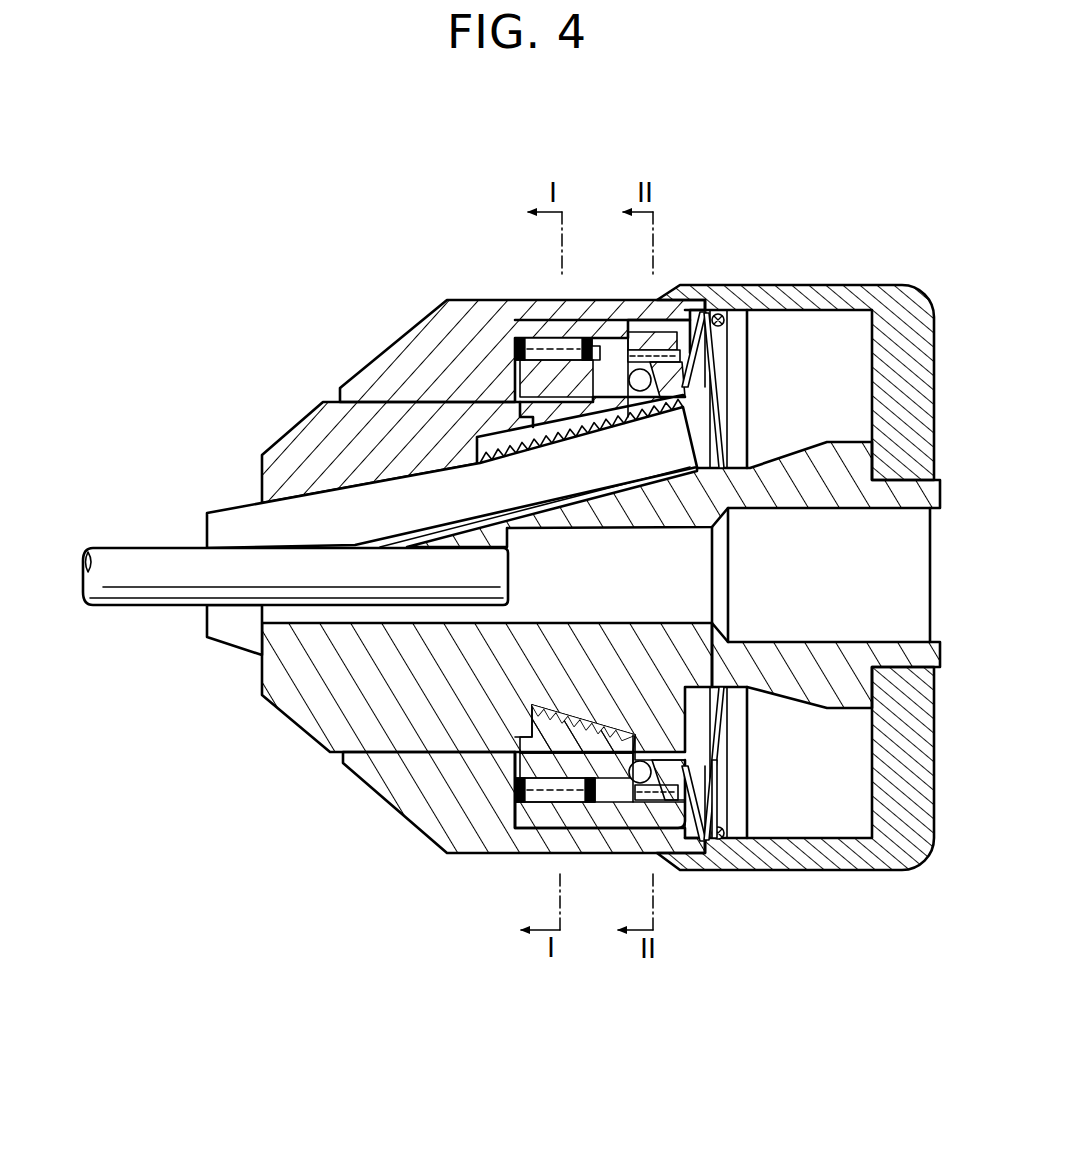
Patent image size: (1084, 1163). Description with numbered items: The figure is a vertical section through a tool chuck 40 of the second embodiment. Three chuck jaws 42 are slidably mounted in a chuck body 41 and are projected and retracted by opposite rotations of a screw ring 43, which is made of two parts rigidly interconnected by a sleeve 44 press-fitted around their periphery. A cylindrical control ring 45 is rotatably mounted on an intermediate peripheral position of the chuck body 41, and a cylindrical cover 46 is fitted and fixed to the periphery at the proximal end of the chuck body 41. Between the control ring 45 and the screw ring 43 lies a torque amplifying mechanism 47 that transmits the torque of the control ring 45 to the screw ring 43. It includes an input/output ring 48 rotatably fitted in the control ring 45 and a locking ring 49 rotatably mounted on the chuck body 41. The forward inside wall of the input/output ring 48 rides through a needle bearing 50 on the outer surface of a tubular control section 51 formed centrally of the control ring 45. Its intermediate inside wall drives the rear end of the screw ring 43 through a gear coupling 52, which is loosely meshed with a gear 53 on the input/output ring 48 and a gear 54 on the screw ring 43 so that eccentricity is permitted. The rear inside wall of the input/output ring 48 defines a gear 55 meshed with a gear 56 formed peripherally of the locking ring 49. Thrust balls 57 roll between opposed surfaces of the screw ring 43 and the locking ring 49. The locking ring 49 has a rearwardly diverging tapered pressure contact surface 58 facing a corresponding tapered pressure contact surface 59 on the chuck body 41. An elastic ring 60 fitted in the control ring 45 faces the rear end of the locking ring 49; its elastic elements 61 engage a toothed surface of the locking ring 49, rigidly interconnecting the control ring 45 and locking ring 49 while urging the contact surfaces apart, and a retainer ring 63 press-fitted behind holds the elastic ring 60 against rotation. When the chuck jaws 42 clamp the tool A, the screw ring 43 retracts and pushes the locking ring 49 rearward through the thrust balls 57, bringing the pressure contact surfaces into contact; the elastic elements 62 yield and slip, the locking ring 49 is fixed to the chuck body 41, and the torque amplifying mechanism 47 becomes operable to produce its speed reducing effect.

The tool chuck 40 is at (268, 303).
The chuck body 41 is at (287, 693).
The chuck jaws 42 is at (232, 523).
The screw ring 43 is at (515, 753).
The sleeve 44 is at (584, 767).
The control ring 45 is at (420, 815).
The cover 46 is at (820, 285).
The torque amplifying mechanism 47 is at (613, 790).
The input/output ring 48 is at (597, 345).
The locking ring 49 is at (658, 348).
The needle bearing 50 is at (545, 325).
The tubular control section 51 is at (550, 335).
The gear coupling 52 is at (605, 835).
The gear 53 is at (622, 350).
The gear 54 is at (640, 332).
The gear 55 is at (683, 322).
The gear 56 is at (708, 318).
The thrust balls 57 is at (636, 422).
The tapered pressure contact surface 58 is at (690, 745).
The tapered pressure contact surface 59 is at (640, 752).
The elastic ring 60 is at (712, 337).
The elastic elements 61 is at (708, 378).
The elastic elements 62 is at (690, 398).
The retainer ring 63 is at (724, 312).
The tool A is at (140, 567).